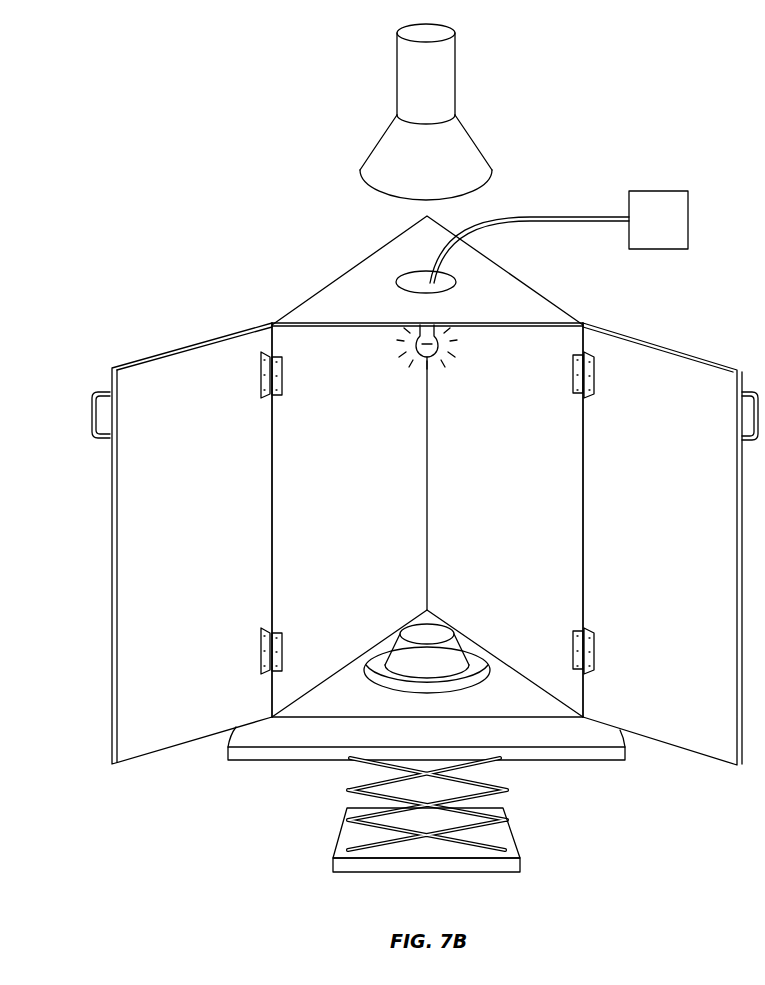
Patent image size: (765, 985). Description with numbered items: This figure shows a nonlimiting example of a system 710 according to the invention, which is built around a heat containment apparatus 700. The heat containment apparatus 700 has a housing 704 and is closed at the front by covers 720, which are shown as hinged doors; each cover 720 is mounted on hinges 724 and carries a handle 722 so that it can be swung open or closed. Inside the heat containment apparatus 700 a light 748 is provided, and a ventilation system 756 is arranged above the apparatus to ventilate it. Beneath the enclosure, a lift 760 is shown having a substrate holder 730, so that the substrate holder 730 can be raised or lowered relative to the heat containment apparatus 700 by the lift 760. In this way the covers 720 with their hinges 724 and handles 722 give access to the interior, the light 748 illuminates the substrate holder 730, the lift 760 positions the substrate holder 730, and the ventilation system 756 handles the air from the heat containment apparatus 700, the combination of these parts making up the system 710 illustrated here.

The system 710 is at (180, 133).
The heat containment apparatus 700 is at (172, 297).
The housing 704 is at (103, 787).
The covers 720 is at (594, 345).
The handles 722 is at (730, 368).
The hinges 724 is at (592, 655).
The substrate holder 730 is at (383, 668).
The light 748 is at (538, 216).
The ventilation system 756 is at (446, 60).
The lift 760 is at (533, 755).